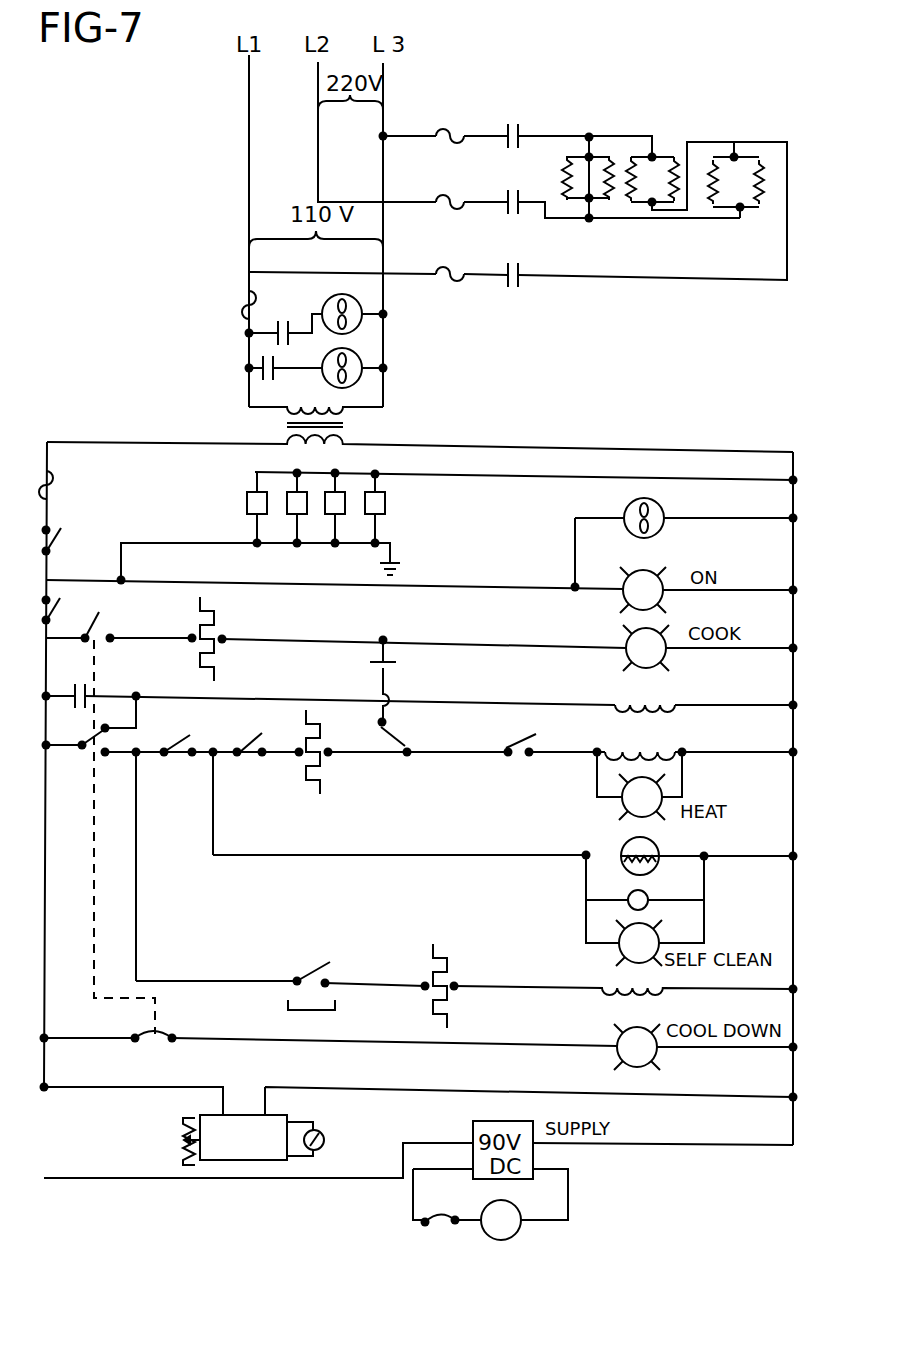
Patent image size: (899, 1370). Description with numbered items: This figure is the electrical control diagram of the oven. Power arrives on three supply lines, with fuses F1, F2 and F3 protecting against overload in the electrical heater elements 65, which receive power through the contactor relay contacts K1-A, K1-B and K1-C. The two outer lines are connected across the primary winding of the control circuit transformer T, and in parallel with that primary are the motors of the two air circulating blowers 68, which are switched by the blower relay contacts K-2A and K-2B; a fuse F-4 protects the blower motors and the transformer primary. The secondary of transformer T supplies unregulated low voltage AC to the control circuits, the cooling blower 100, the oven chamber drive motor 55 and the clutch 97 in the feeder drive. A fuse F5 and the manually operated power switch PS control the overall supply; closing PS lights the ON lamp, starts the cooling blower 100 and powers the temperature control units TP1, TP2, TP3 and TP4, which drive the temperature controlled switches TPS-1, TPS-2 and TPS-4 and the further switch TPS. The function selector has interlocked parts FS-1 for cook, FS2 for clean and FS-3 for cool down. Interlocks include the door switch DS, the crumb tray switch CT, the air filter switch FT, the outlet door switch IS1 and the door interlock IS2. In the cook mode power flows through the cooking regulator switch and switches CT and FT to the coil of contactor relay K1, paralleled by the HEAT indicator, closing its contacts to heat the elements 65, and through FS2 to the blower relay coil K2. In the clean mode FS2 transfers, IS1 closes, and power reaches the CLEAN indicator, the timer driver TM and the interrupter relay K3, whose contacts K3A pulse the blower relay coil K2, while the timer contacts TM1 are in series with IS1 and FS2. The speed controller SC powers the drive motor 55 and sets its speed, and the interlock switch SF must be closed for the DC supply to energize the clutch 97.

The electrical heater elements 65 is at (664, 126).
The air circulating blowers 68 is at (362, 360).
The cooling blower 100 is at (660, 506).
The oven chamber drive motor 55 is at (322, 1133).
The clutch 97 is at (515, 1208).
The control circuit transformer T is at (368, 433).
The fuse F1 is at (517, 123).
The fuse F2 is at (561, 187).
The fuse F3 is at (518, 211).
The fuse F-4 is at (240, 304).
The fuse F5 is at (58, 494).
The contactor relay contact K1-A is at (508, 128).
The contactor relay contact K1-B is at (510, 192).
The contactor relay contact K1-C is at (510, 266).
The blower motor relay contact K-2A is at (290, 322).
The blower motor relay contact K-2B is at (260, 372).
The power switch PS is at (56, 546).
The door switch DS is at (54, 614).
The temperature control unit TP1 is at (246, 508).
The temperature control unit TP2 is at (288, 492).
The temperature control unit TP3 is at (345, 506).
The temperature control unit TP4 is at (385, 506).
The cook cycle selector switch FS-1 is at (100, 612).
The clean cycle selector switch FS2 is at (98, 746).
The cool down cycle selector switch FS-3 is at (148, 1032).
The temperature controlled switch TPS-1 is at (213, 633).
The temperature controlled switch TPS-2 is at (388, 670).
The temperature limit switch TPS-4 is at (448, 980).
The temperature controlled switch TPS is at (324, 766).
The blower motor relay coil K2 is at (660, 705).
The interrupter relay contacts K3A is at (90, 688).
The interlock switch IS1 is at (176, 742).
The door interlock switch IS2 is at (315, 970).
The timer contacts TM1 is at (252, 756).
The crumb tray switch CT is at (402, 734).
The filter switch FT is at (522, 738).
The contactor relay coil K1 is at (660, 752).
The interrupter type relay K3 is at (656, 848).
The cleaning period timer driver TM is at (648, 896).
The speed controller SC is at (240, 1113).
The feed housing interlock switch SF is at (424, 1230).